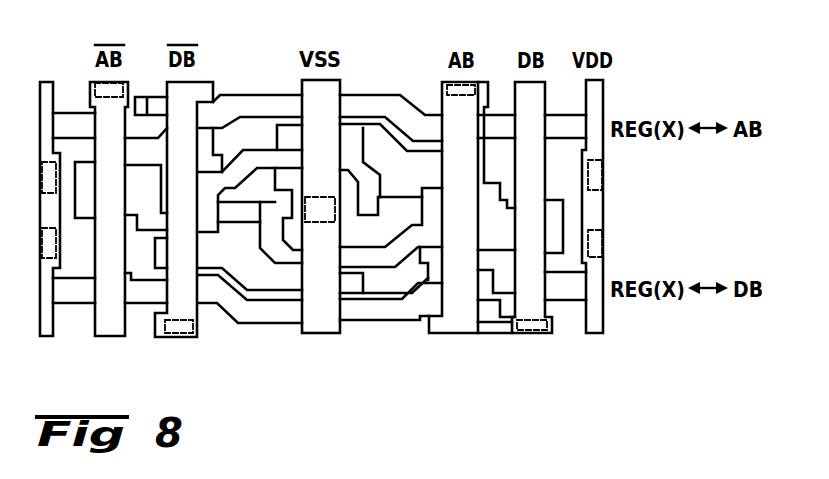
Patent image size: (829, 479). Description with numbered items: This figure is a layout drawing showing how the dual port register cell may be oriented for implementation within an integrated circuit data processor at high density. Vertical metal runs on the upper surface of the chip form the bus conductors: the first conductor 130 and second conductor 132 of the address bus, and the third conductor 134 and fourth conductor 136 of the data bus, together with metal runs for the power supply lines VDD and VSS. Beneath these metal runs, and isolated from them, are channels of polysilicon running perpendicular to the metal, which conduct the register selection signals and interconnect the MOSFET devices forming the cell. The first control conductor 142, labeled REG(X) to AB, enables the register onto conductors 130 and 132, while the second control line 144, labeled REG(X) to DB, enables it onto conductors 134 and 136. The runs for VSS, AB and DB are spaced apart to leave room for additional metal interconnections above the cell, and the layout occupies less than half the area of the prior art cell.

The first conductor 130 is at (489, 80).
The second conductor 132 is at (110, 337).
The third conductor 134 is at (548, 80).
The fourth conductor 136 is at (190, 337).
The first control conductor 142 is at (582, 124).
The second control line 144 is at (582, 286).